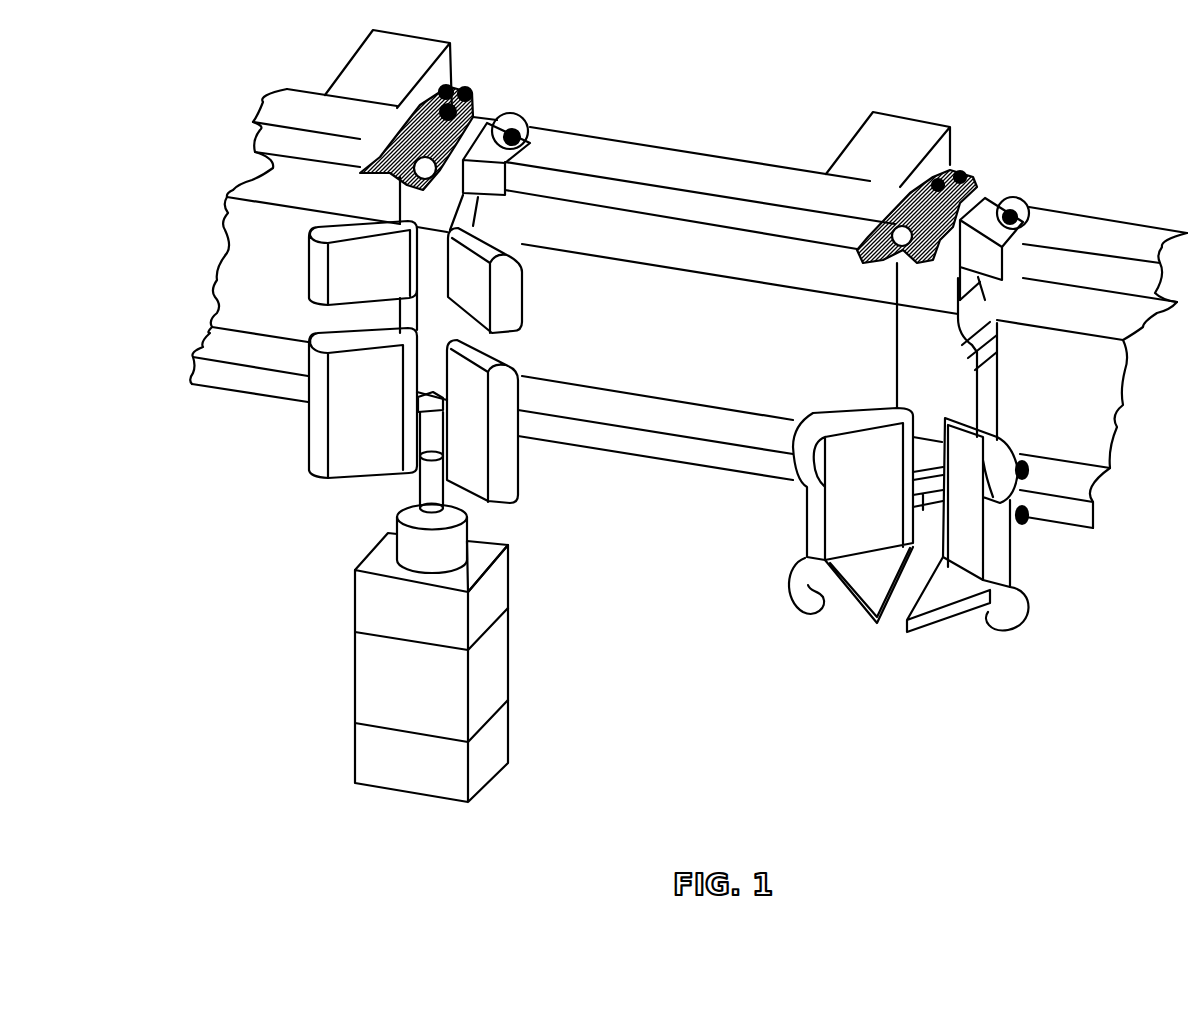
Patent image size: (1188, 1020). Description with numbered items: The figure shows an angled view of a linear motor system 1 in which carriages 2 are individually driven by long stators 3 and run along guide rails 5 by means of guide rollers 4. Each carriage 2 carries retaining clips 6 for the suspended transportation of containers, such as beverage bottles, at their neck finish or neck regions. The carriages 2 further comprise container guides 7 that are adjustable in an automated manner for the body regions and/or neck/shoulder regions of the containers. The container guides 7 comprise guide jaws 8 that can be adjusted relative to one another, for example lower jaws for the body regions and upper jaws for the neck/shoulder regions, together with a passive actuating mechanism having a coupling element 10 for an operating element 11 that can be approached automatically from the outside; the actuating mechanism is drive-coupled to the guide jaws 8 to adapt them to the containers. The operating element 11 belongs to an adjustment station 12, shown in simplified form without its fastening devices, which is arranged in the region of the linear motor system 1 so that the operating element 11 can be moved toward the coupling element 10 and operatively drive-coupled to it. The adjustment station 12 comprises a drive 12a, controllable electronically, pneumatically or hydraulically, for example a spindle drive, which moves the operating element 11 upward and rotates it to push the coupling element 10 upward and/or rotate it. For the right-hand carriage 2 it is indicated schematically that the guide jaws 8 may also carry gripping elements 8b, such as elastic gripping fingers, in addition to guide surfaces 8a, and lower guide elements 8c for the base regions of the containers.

The linear motor system 1 is at (188, 714).
The carriage 2 is at (562, 275).
The long stator 3 is at (238, 315).
The guide roller 4 is at (492, 115).
The guide rail 5 is at (705, 165).
The retaining clip 6 is at (362, 178).
The container guide 7 is at (674, 455).
The guide jaw 8 is at (325, 343).
The guide surface 8a is at (973, 547).
The gripping element 8b is at (798, 580).
The lower guide element 8c is at (860, 608).
The coupling element 10 is at (925, 510).
The operating element 11 is at (428, 477).
The adjustment station 12 is at (444, 667).
The drive 12a is at (380, 672).